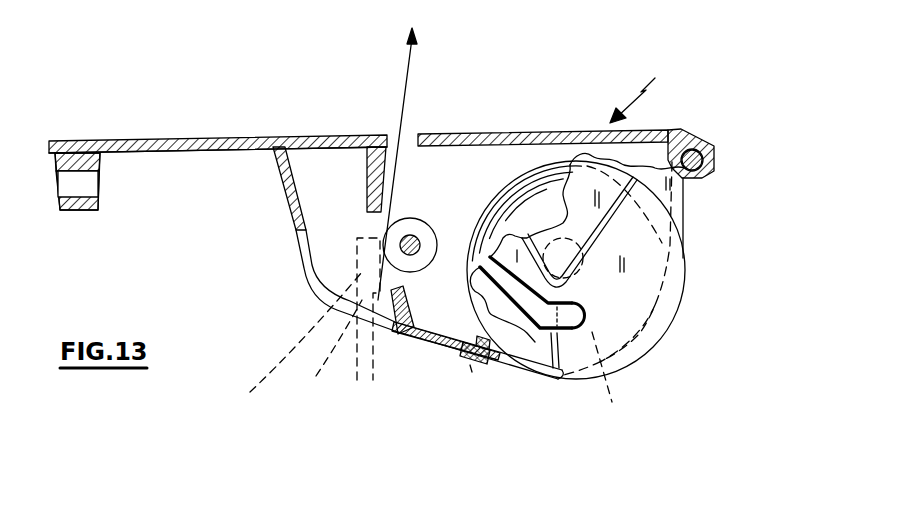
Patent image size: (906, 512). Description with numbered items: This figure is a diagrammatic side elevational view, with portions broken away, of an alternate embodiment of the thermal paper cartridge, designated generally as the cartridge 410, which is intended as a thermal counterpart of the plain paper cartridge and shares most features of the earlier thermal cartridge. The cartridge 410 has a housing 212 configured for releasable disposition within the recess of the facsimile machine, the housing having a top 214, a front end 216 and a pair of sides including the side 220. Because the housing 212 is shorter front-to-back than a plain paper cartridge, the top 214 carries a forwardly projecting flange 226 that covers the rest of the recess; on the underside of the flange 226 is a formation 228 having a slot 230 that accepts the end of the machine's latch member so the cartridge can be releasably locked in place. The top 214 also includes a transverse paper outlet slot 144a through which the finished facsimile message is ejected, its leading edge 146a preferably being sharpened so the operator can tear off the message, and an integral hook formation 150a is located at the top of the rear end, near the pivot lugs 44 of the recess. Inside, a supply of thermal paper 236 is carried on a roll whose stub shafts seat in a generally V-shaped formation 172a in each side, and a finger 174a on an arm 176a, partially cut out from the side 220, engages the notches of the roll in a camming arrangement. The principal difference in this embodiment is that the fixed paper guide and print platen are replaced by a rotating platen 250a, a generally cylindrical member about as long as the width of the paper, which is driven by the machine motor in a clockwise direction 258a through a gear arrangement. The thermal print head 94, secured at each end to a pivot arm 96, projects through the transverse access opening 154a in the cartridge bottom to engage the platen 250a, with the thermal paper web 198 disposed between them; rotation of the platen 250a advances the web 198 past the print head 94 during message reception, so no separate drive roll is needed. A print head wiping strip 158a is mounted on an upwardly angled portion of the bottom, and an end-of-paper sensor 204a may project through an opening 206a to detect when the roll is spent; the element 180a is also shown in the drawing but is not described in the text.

The housing 212 is at (252, 141).
The forwardly projecting flange 226 is at (190, 168).
The slot 230 is at (60, 185).
The formation 228 is at (100, 208).
The front end 216 is at (284, 190).
The transverse access opening 154a is at (305, 270).
The print head wiping strip 158a is at (394, 336).
The clockwise direction 258a is at (438, 264).
The end-of-ribbon (paper) sensor 204a is at (486, 364).
The opening 206a is at (471, 372).
The channel end 180a is at (533, 374).
The leading edge of the slot 146a is at (395, 147).
The transverse paper outlet slot 144a is at (418, 144).
The rotating platen 250a is at (410, 218).
The side 220 is at (652, 335).
The top 214 is at (665, 130).
The integral hook formation 150a is at (705, 162).
The pivot lugs 44 is at (695, 180).
The thermal cartridge 410 is at (647, 88).
The thermal paper 236 is at (522, 165).
The thermal paper web 198 is at (432, 262).
The "V"-shaped formation 172a is at (612, 240).
The arm 176a is at (590, 320).
The finger 174a is at (627, 373).
The thermal print head 94 is at (305, 326).
The pivot arm 96 is at (326, 357).